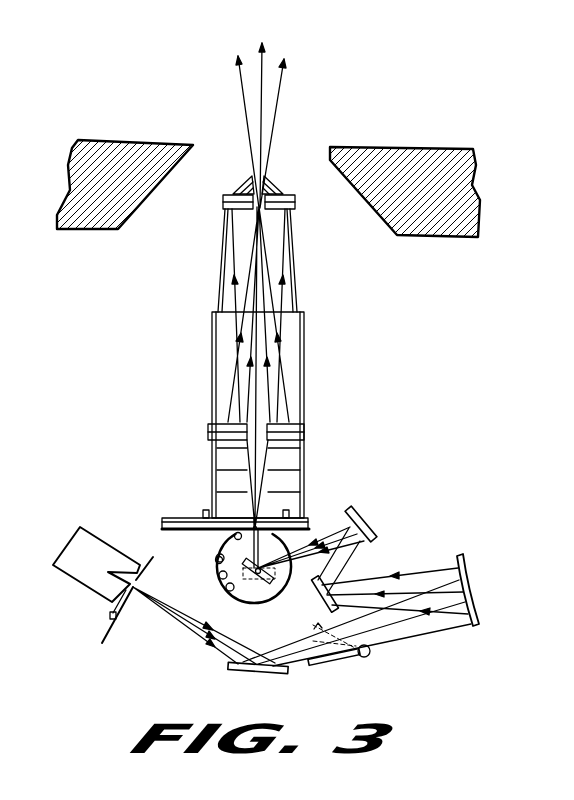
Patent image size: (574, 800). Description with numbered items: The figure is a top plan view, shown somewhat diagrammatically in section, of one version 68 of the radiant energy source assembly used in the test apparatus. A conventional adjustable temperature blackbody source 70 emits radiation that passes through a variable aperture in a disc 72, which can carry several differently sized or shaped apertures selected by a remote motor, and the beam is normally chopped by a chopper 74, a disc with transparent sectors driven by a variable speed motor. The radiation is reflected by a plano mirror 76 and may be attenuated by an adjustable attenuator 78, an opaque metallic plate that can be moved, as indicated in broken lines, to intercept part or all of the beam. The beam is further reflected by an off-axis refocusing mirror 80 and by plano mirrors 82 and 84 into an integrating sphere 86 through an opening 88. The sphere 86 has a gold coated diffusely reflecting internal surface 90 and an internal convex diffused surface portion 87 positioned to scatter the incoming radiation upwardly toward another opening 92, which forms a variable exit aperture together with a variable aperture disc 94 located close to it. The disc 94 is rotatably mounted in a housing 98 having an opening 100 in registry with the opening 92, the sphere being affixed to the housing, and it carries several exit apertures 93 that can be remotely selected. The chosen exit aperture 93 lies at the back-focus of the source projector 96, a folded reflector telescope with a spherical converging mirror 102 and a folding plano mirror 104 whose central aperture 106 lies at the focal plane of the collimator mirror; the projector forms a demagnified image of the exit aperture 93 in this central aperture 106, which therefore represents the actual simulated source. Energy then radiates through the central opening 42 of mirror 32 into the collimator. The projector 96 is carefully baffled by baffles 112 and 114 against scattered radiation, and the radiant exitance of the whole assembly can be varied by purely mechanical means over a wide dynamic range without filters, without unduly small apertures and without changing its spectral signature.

The mirror 32 is at (160, 145).
The central opening 42 is at (279, 176).
The source assembly version 68 is at (186, 311).
The blackbody source 70 is at (67, 544).
The disc 72 is at (152, 560).
The chopper 74 is at (112, 632).
The plano mirror 76 is at (258, 672).
The adjustable attenuator 78 is at (348, 657).
The off-axis refocusing mirror 80 is at (470, 572).
The plano mirror 82 is at (318, 598).
The plano mirror 84 is at (373, 535).
The integrating sphere 86 is at (258, 603).
The internal convex diffused surface portion 87 is at (236, 590).
The opening 88 is at (290, 565).
The internal surface 90 is at (216, 560).
The opening 92 is at (234, 538).
The exit aperture 93 is at (268, 514).
The variable aperture disc 94 is at (290, 518).
The source projector 96 is at (305, 370).
The housing 98 is at (170, 518).
The opening 100 is at (252, 520).
The spherical converging mirror 102 is at (232, 420).
The folding plano mirror 104 is at (240, 210).
The central aperture 106 is at (283, 211).
The baffle 112 is at (290, 470).
The baffle 114 is at (242, 184).